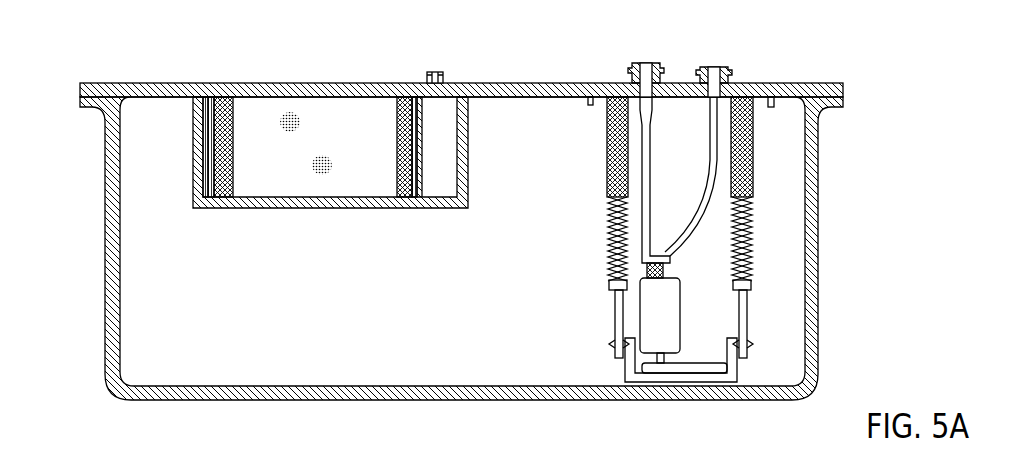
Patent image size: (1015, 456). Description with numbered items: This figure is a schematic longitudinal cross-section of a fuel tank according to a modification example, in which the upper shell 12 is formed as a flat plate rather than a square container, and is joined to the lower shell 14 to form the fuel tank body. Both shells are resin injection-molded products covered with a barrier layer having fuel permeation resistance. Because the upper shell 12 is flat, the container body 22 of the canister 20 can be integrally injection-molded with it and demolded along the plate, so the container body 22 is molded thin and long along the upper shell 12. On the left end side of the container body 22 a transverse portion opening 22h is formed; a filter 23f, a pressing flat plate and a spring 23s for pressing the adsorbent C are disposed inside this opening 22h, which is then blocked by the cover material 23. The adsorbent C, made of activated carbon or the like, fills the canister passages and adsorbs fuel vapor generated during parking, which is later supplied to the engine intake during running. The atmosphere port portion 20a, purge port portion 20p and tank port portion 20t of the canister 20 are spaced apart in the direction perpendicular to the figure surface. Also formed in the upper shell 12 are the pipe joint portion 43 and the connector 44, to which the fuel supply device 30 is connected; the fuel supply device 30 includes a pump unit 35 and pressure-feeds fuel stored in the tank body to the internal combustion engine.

The lower shell 14 is at (194, 402).
The upper shell 12 is at (292, 83).
The canister 20 is at (352, 158).
The atmosphere port portion 20a is at (496, 55).
The purge port portion 20p is at (483, 55).
The tank port portion 20t is at (496, 51).
The container body 22 is at (375, 210).
The transverse portion opening 22h is at (205, 200).
The cover material 23 is at (277, 187).
The spring 23s is at (212, 197).
The filter 23f is at (235, 197).
The adsorbent C is at (323, 156).
The pipe joint portion 43 is at (662, 74).
The connector 44 is at (729, 70).
The fuel supply device 30 is at (606, 243).
The pump unit 35 is at (672, 318).